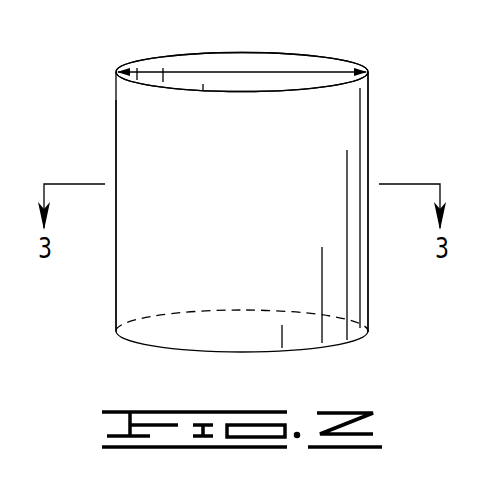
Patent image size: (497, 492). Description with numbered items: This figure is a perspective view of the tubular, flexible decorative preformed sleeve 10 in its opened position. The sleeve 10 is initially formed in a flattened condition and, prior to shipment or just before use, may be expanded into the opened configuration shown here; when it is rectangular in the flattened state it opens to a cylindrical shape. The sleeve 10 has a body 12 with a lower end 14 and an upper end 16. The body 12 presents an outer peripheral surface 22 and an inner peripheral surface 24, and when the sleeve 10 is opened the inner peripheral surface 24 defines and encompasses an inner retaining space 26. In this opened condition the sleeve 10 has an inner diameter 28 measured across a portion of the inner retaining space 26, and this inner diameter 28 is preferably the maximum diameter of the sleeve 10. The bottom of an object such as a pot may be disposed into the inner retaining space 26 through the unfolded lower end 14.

The sleeve 10 is at (111, 58).
The body 12 is at (116, 288).
The lower end 14 is at (260, 350).
The upper end 16 is at (282, 53).
The outer peripheral surface 22 is at (368, 146).
The inner peripheral surface 24 is at (180, 63).
The inner retaining space 26 is at (310, 65).
The inner diameter 28 is at (258, 64).